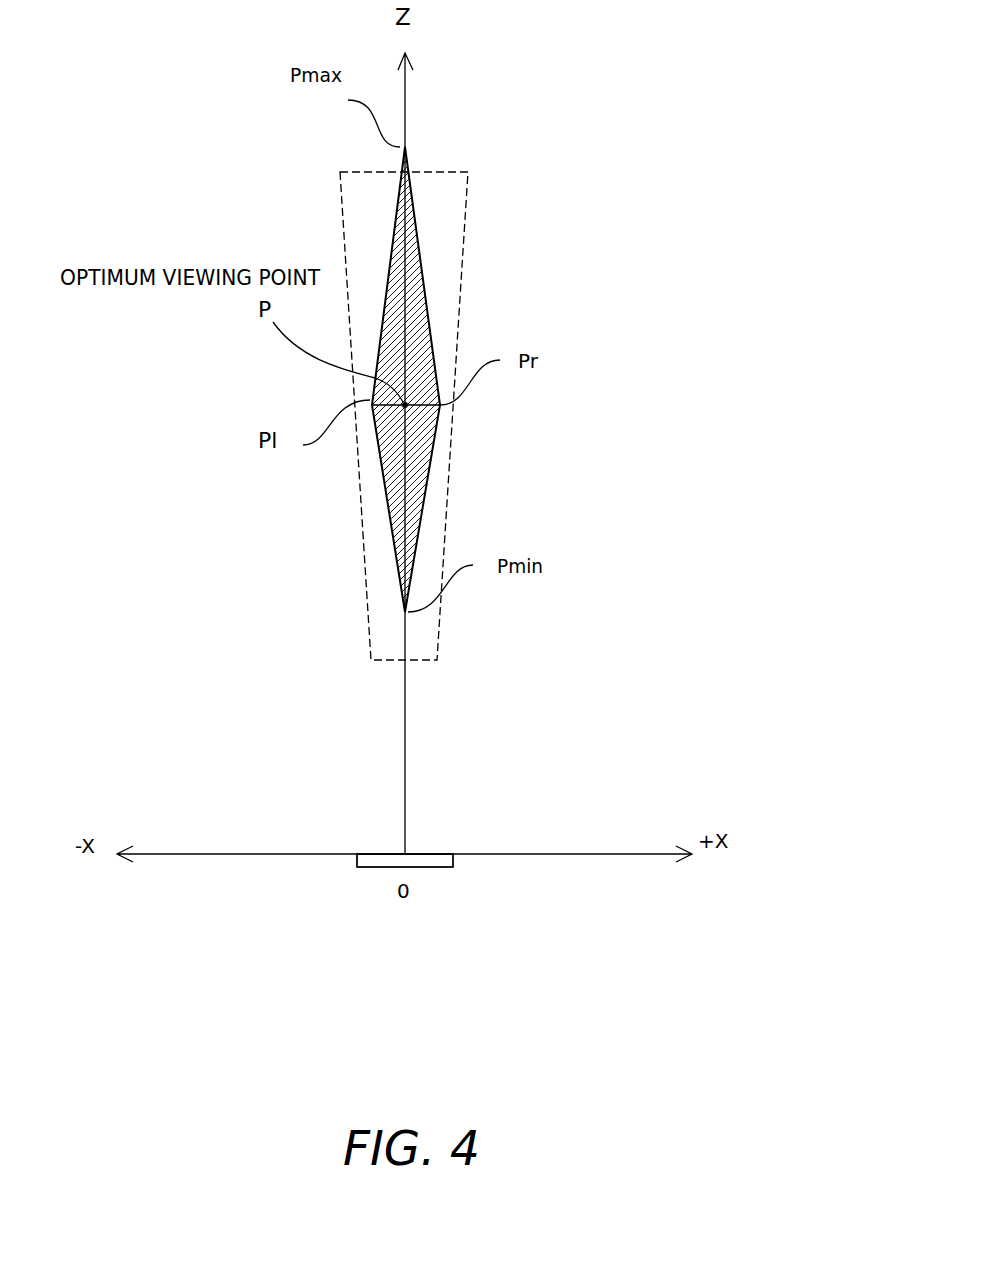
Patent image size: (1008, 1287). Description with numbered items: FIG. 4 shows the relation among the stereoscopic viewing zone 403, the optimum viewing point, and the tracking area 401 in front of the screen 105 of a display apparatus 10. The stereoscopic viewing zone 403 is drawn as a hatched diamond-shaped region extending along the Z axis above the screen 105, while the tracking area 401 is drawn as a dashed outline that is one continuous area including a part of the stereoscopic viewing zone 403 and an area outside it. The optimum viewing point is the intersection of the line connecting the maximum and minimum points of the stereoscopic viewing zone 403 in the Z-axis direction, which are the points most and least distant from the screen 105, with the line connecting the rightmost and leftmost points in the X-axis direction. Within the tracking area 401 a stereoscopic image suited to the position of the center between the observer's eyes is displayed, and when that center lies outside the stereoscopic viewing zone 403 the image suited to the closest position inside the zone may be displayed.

The stereoscopic viewing zone 403 is at (413, 190).
The tracking area 401 is at (460, 272).
The screen 105 is at (370, 851).
The display apparatus 10 is at (437, 867).